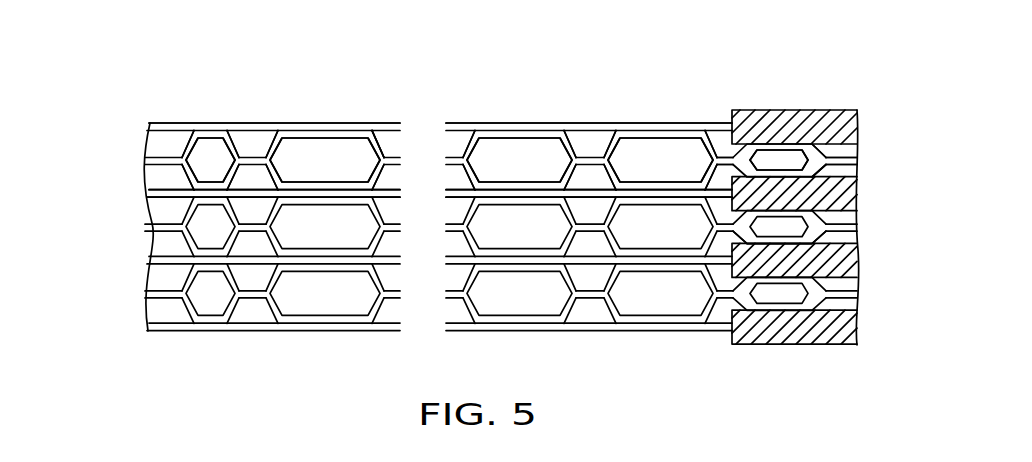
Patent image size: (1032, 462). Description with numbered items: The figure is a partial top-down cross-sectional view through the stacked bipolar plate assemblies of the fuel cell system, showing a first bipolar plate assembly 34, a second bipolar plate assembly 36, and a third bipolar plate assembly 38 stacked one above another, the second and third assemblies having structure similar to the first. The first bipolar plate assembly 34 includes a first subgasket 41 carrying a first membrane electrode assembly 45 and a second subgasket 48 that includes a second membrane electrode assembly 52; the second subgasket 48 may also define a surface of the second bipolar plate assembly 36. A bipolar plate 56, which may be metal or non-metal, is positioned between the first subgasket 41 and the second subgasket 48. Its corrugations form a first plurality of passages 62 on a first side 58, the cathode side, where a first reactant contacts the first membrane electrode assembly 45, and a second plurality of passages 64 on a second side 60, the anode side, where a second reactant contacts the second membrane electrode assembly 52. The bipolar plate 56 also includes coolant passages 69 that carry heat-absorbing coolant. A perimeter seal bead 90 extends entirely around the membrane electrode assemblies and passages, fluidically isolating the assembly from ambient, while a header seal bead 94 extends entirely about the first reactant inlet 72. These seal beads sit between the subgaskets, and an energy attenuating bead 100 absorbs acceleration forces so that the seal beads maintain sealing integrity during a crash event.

The first bipolar plate assembly 34 is at (93, 148).
The second bipolar plate assembly 36 is at (97, 198).
The third bipolar plate assembly 38 is at (103, 293).
The first subgasket 41 is at (185, 123).
The second subgasket 48 is at (168, 197).
The energy attenuating bead 100 is at (190, 150).
The header seal bead 94 is at (298, 134).
The first reactant inlet 72 is at (387, 138).
The perimeter seal bead 90 is at (652, 134).
The bipolar plate 56 is at (716, 134).
The coolant passages 69 is at (777, 160).
The first membrane electrode assembly 45 is at (788, 128).
The first plurality of passages 62 is at (823, 150).
The first side 58 is at (858, 127).
The second plurality of passages 64 is at (840, 172).
The second side 60 is at (828, 163).
The second membrane electrode assembly 52 is at (808, 237).